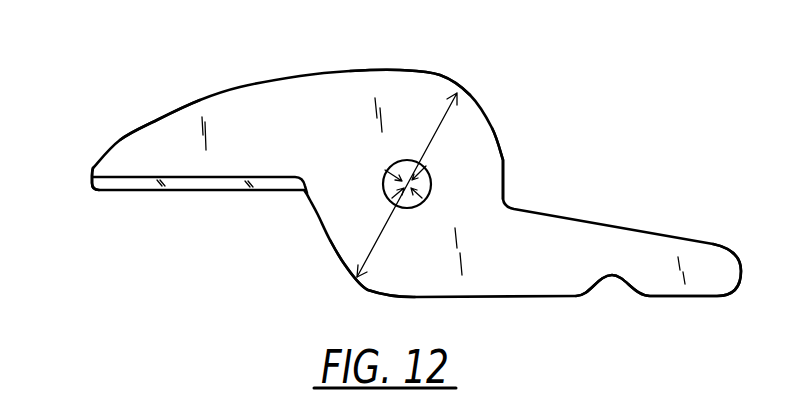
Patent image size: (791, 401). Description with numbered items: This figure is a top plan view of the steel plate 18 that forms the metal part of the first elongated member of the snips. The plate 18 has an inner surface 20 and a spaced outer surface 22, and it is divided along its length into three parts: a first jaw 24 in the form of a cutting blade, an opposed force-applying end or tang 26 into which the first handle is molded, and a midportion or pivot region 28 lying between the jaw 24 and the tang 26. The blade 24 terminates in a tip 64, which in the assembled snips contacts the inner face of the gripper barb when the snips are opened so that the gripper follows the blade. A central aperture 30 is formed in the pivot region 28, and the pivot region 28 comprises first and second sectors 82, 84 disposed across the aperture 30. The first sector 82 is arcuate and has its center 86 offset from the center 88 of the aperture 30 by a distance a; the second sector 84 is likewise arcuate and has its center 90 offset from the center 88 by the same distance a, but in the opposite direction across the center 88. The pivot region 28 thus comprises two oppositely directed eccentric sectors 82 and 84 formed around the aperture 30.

The steel plate 18 is at (271, 81).
The inner surface 20 is at (208, 108).
The outer surface 22 is at (188, 172).
The first jaw 24 is at (158, 121).
The tang 26 is at (682, 289).
The pivot region 28 is at (505, 157).
The central aperture 30 is at (396, 206).
The tip 64 is at (97, 168).
The first sector 82 is at (377, 282).
The second sector 84 is at (407, 77).
The center of first sector 86 is at (429, 189).
The center of aperture 88 is at (397, 189).
The center of second sector 90 is at (394, 180).
The offset distance a is at (413, 164).